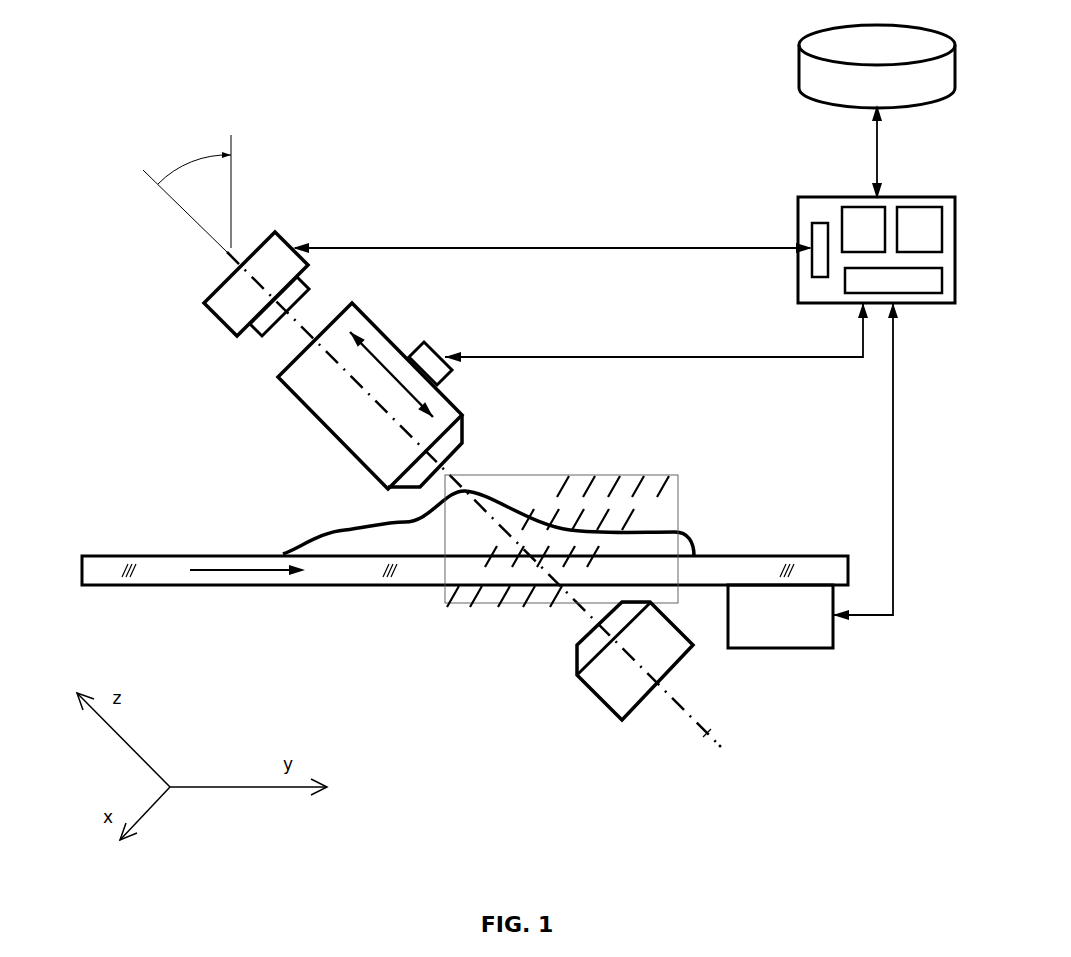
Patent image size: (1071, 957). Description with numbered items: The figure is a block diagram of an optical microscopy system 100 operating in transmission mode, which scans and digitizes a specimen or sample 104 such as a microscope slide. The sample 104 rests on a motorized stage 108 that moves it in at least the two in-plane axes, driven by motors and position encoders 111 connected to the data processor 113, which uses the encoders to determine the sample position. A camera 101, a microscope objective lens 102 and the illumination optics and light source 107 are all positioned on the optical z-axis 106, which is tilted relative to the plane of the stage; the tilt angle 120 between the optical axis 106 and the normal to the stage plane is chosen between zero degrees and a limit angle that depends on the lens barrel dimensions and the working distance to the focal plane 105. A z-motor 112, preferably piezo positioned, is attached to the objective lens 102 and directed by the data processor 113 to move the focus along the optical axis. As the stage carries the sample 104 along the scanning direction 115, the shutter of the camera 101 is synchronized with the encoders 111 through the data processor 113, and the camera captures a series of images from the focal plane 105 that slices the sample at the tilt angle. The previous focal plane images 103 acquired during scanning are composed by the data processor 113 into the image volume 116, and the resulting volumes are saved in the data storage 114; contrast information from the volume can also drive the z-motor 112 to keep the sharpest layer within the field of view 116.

The optical microscopy system 100 is at (332, 148).
The camera 101 is at (215, 323).
The microscope objective lens 102 is at (338, 437).
The focal plane images 103 is at (585, 477).
The specimen or sample 104 is at (693, 530).
The focal plane 105 is at (445, 592).
The optical z-axis 106 is at (712, 736).
The illumination optics and light source 107 is at (602, 703).
The motorized stage 108 is at (228, 556).
The motors and position encoders 111 is at (777, 650).
The z-motor 112 is at (468, 355).
The data processor 113 is at (810, 197).
The data storage 114 is at (799, 62).
The scanning direction 115 is at (218, 585).
The image volume 116 is at (540, 612).
The tilt angle 120 is at (183, 169).